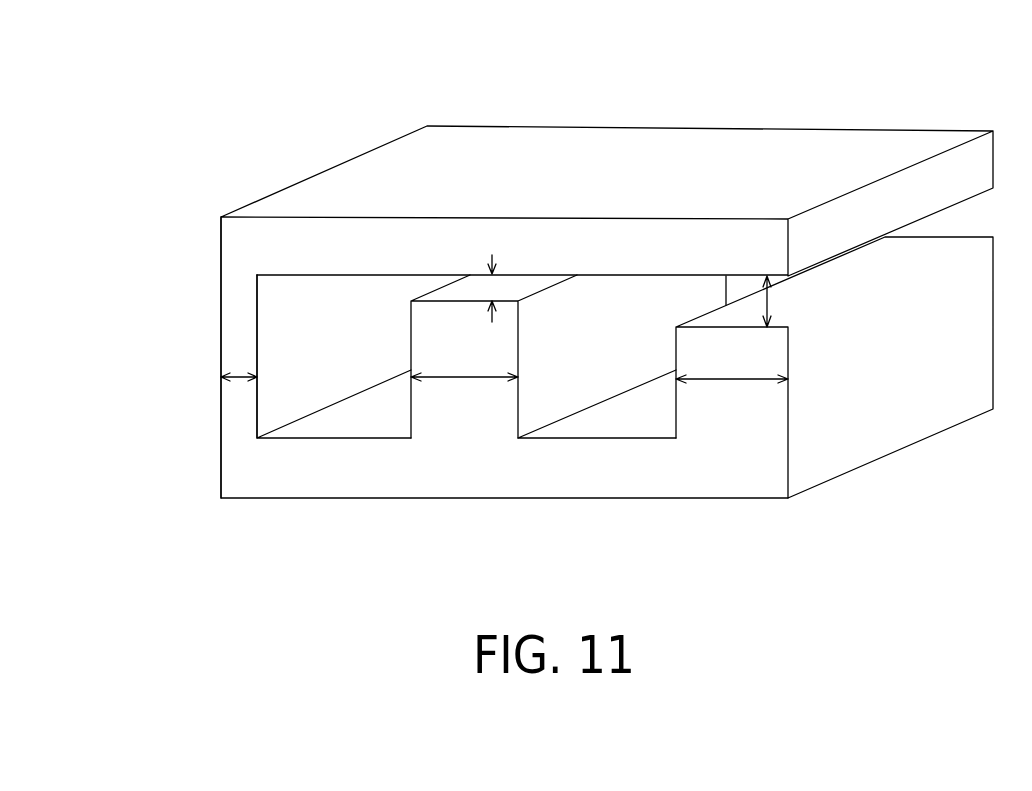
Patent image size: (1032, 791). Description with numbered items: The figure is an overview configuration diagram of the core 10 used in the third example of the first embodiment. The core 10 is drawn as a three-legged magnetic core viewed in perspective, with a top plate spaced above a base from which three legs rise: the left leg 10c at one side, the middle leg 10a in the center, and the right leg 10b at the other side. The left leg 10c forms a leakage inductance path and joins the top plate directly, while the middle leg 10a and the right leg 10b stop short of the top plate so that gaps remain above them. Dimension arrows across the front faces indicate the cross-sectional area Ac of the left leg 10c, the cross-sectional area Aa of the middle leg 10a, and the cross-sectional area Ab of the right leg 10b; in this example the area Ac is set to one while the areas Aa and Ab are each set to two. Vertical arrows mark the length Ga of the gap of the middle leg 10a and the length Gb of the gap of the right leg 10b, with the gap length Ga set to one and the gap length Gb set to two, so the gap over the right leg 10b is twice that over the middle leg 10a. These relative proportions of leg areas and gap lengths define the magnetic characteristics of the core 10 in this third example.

The core 10 is at (224, 123).
The middle leg 10a is at (475, 419).
The right leg 10b is at (743, 422).
The left leg 10c is at (240, 423).
The cross-sectional area of the middle leg Aa is at (464, 356).
The cross-sectional area of the right leg Ab is at (732, 357).
The cross-sectional area of the left leg Ac is at (238, 372).
The length of the gap of the middle leg Ga is at (495, 288).
The length of the gap of the right leg Gb is at (772, 305).